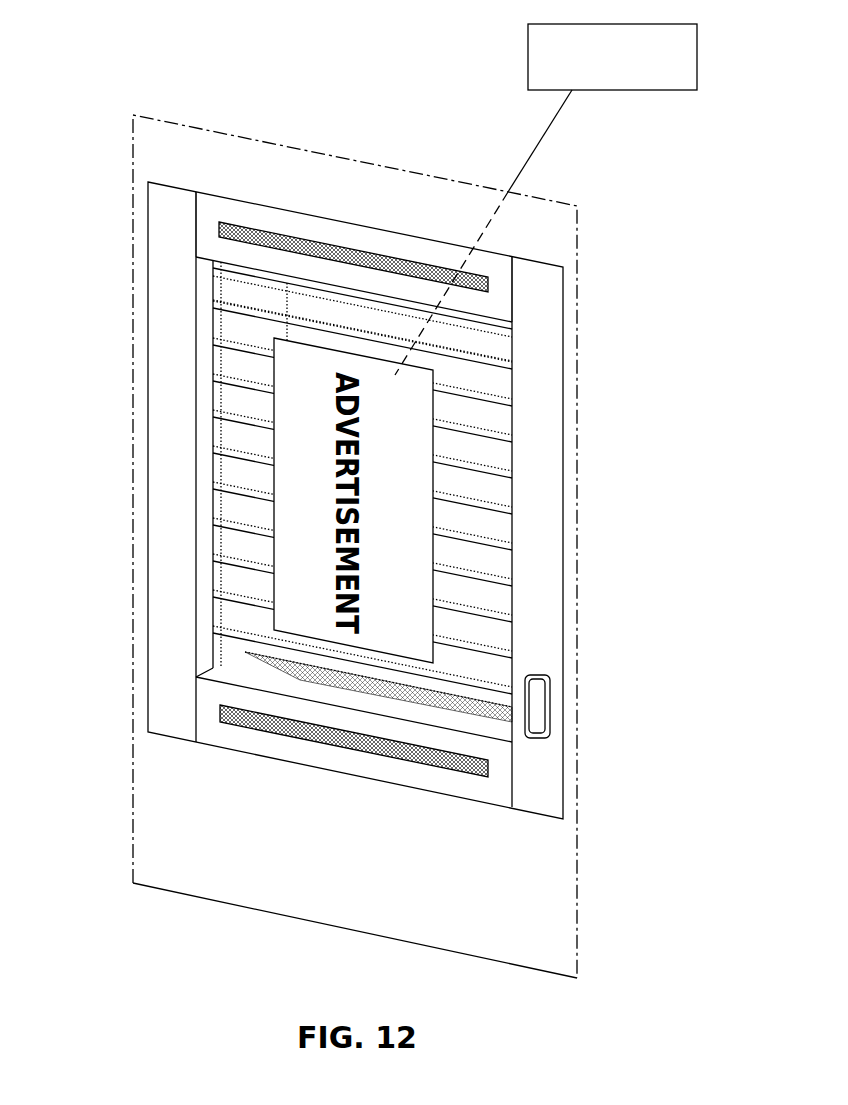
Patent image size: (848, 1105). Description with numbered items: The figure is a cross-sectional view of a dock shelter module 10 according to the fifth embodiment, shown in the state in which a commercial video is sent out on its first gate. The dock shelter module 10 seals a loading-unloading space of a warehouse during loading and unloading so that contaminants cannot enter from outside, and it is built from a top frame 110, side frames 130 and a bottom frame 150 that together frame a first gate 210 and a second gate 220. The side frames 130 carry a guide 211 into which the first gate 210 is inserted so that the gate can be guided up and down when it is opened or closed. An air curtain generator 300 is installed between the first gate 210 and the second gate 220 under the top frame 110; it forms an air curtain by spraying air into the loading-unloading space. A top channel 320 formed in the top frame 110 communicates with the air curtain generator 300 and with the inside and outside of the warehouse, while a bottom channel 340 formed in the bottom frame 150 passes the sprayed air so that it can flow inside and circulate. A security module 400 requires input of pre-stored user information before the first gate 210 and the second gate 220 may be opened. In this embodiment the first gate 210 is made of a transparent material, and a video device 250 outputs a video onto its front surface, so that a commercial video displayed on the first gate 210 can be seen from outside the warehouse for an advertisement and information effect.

The dock shelter module 10 is at (131, 56).
The top frame 110 is at (209, 205).
The side frames 130 is at (148, 568).
The bottom frame 150 is at (203, 703).
The first gate 210 is at (255, 478).
The guide 211 is at (219, 400).
The second gate 220 is at (487, 464).
The video device 250 is at (697, 44).
The air curtain generator 300 is at (275, 280).
The top channel 320 is at (219, 231).
The bottom channel 340 is at (240, 722).
The security module 400 is at (537, 703).